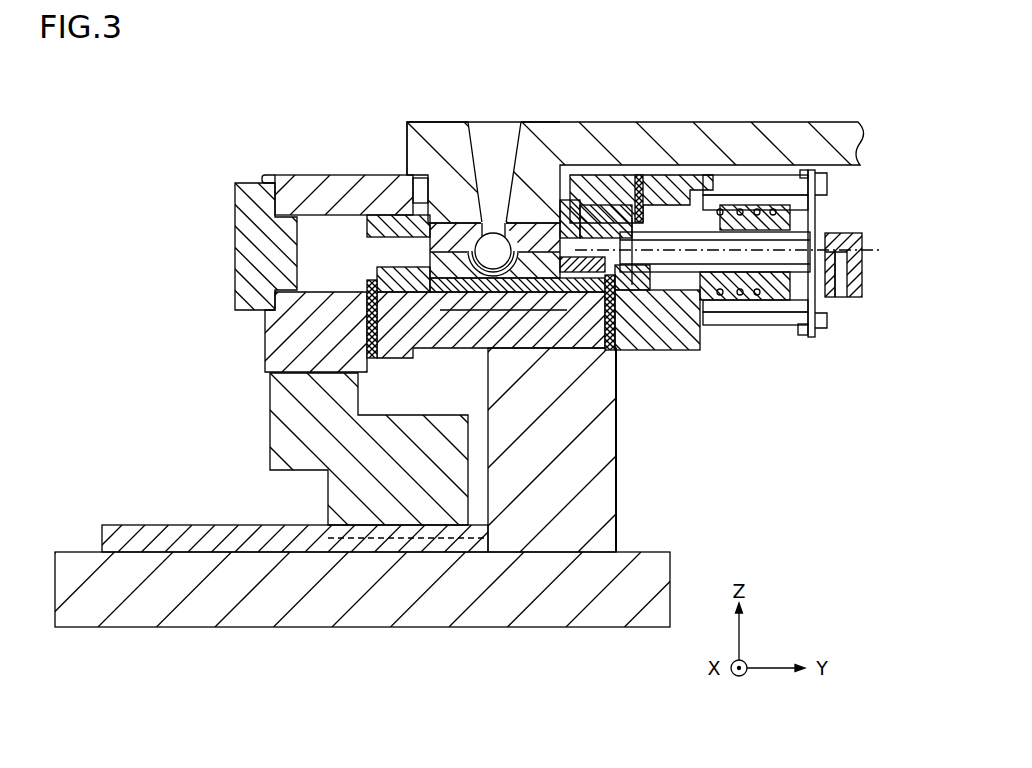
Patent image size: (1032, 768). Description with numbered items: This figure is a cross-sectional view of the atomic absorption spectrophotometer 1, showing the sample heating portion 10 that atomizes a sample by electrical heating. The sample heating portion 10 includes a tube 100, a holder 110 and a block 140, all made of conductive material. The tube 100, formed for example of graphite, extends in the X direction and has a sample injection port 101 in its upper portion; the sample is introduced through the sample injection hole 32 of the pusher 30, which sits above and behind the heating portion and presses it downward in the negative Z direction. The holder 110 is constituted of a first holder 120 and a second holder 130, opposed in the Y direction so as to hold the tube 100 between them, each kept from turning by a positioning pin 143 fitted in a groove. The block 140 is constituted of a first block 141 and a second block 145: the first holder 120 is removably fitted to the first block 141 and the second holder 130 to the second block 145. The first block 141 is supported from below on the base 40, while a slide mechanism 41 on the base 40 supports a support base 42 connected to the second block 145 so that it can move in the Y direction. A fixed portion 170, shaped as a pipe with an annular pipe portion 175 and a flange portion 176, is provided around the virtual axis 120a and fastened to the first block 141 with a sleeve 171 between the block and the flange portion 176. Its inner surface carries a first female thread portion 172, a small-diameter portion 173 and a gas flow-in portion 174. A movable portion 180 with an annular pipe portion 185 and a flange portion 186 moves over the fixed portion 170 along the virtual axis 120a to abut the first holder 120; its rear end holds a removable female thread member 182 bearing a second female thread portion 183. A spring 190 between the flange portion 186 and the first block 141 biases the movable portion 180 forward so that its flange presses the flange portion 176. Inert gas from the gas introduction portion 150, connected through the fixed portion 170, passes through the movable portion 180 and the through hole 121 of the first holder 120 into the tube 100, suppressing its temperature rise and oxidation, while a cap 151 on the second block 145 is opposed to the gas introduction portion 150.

The atomic absorption spectrophotometer 1 is at (201, 121).
The sample heating portion 10 is at (291, 168).
The pusher 30 is at (703, 137).
The sample injection hole 32 is at (499, 112).
The base 40 is at (600, 476).
The slide mechanism 41 is at (175, 535).
The support base 42 is at (292, 426).
The tube 100 is at (455, 236).
The sample injection port 101 is at (494, 212).
The holder 110 is at (531, 124).
The first holder 120 is at (558, 165).
The virtual axis 120a is at (834, 306).
The through hole 121 is at (572, 200).
The second holder 130 is at (393, 212).
The block 140 is at (453, 367).
The first block 141 is at (665, 350).
The positioning pin 143 is at (367, 332).
The second block 145 is at (275, 353).
The gas introduction portion 150 is at (862, 250).
The cap 151 is at (250, 254).
The fixed portion 170 is at (812, 305).
The sleeve 171 is at (770, 302).
The first female thread portion 172 is at (681, 205).
The small-diameter portion 173 is at (795, 205).
The gas flow-in portion 174 is at (824, 236).
The annular pipe portion 175 is at (757, 205).
The flange portion 176 is at (826, 208).
The movable portion 180 is at (748, 326).
The female thread member 182 is at (658, 352).
The second female thread portion 183 is at (603, 207).
The annular pipe portion 185 is at (734, 196).
The flange portion 186 is at (784, 196).
The spring 190 is at (695, 302).